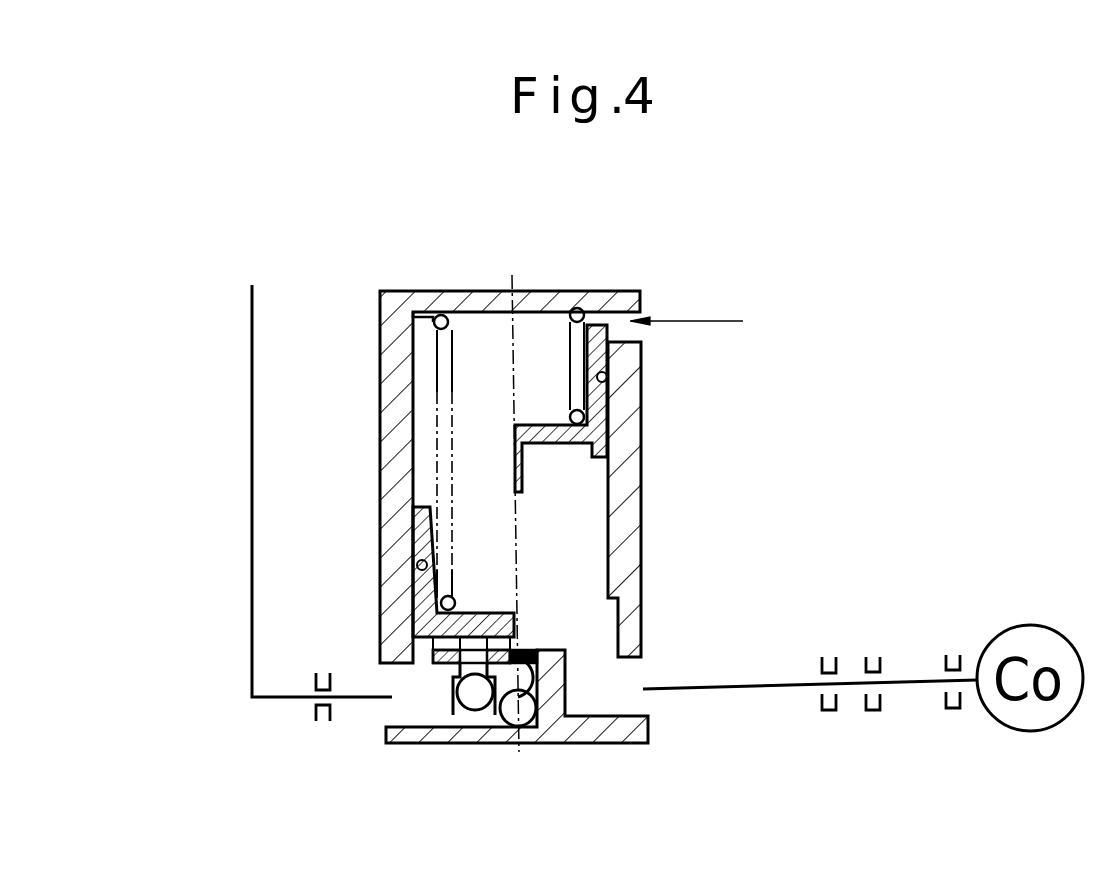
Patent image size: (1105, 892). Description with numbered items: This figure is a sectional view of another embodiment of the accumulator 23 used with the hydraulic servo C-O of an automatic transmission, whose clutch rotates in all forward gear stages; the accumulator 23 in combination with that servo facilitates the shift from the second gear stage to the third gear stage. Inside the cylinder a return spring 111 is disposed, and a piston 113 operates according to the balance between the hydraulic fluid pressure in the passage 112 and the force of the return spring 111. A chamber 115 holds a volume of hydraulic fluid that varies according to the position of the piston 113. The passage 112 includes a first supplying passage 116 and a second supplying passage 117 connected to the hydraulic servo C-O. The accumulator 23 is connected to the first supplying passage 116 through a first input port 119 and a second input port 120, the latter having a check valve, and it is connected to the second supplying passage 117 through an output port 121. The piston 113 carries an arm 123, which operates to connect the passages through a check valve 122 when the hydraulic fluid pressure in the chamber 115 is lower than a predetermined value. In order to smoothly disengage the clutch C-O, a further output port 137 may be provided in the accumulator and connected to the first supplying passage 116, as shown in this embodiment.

The accumulator 23 is at (667, 276).
The return spring 111 is at (442, 368).
The passage 112 is at (757, 666).
The piston 113 is at (415, 608).
The chamber 115 is at (588, 525).
The first supplying passage 116 is at (252, 522).
The second supplying passage 117 is at (796, 688).
The first input port 119 is at (318, 712).
The second input port 120 is at (520, 650).
The output port 121 is at (637, 703).
The check valve 122 is at (510, 712).
The arm 123 is at (522, 468).
The output port 137 is at (468, 698).